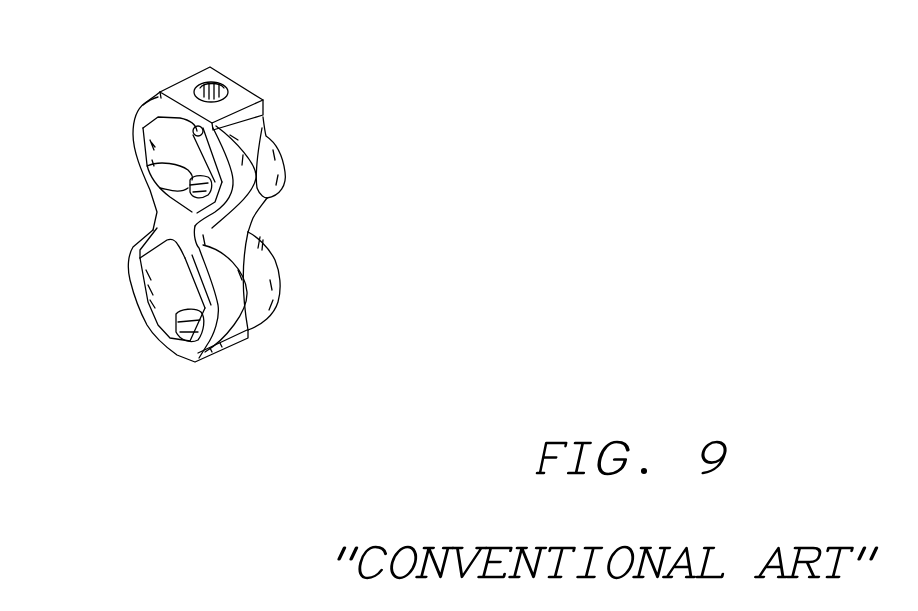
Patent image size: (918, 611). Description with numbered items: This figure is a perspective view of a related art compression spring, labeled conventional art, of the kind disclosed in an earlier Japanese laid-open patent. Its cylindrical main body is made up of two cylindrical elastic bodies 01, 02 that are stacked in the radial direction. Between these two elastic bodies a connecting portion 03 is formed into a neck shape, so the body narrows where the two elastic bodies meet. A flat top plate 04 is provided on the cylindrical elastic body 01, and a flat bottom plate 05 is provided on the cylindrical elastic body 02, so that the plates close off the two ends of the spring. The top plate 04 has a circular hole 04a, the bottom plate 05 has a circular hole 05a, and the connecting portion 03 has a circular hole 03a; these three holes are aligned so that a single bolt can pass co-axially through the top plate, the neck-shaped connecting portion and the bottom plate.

The cylindrical elastic body 01 is at (277, 160).
The cylindrical elastic body 02 is at (267, 287).
The connecting portion 03 is at (173, 227).
The circular hole 03a is at (157, 170).
The top plate 04 is at (242, 85).
The circular hole 04a is at (218, 82).
The bottom plate 05 is at (170, 347).
The circular hole 05a is at (147, 330).